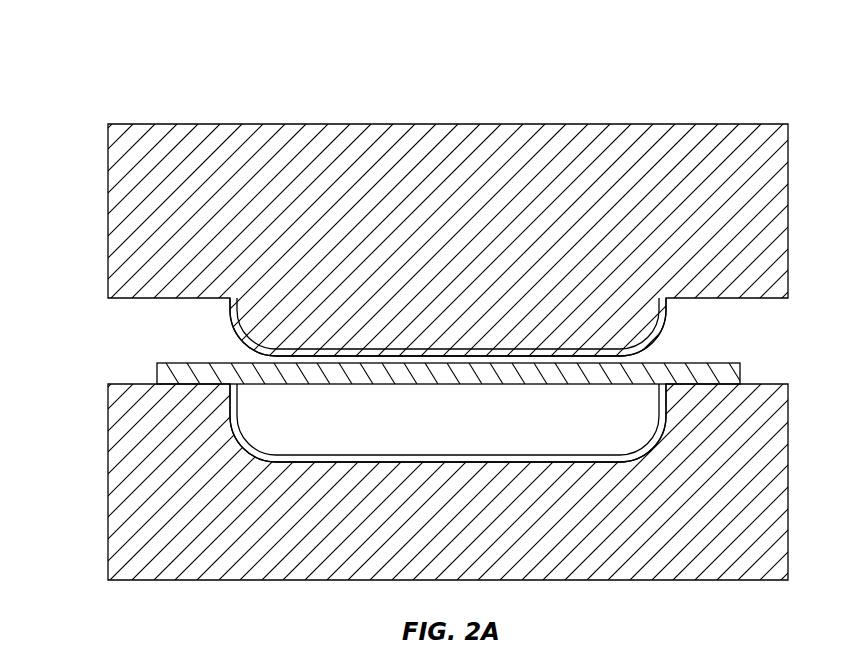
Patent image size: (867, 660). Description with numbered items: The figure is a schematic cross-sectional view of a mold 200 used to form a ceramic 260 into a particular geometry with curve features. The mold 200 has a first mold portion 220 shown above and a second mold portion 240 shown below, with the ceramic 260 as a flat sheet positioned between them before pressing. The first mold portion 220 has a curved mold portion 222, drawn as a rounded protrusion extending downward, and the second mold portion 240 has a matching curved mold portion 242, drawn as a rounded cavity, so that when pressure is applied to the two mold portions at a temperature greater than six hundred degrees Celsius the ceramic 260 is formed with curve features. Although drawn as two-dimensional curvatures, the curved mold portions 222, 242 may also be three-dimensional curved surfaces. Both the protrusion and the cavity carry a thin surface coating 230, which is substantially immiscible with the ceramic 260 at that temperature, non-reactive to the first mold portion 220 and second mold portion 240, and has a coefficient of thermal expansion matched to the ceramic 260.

The mold 200 is at (121, 68).
The first mold portion 220 is at (437, 218).
The curved mold portion 222 is at (223, 304).
The surface coating 230 is at (668, 302).
The second mold portion 240 is at (439, 530).
The curved mold portion 242 is at (224, 413).
The ceramic 260 is at (157, 378).